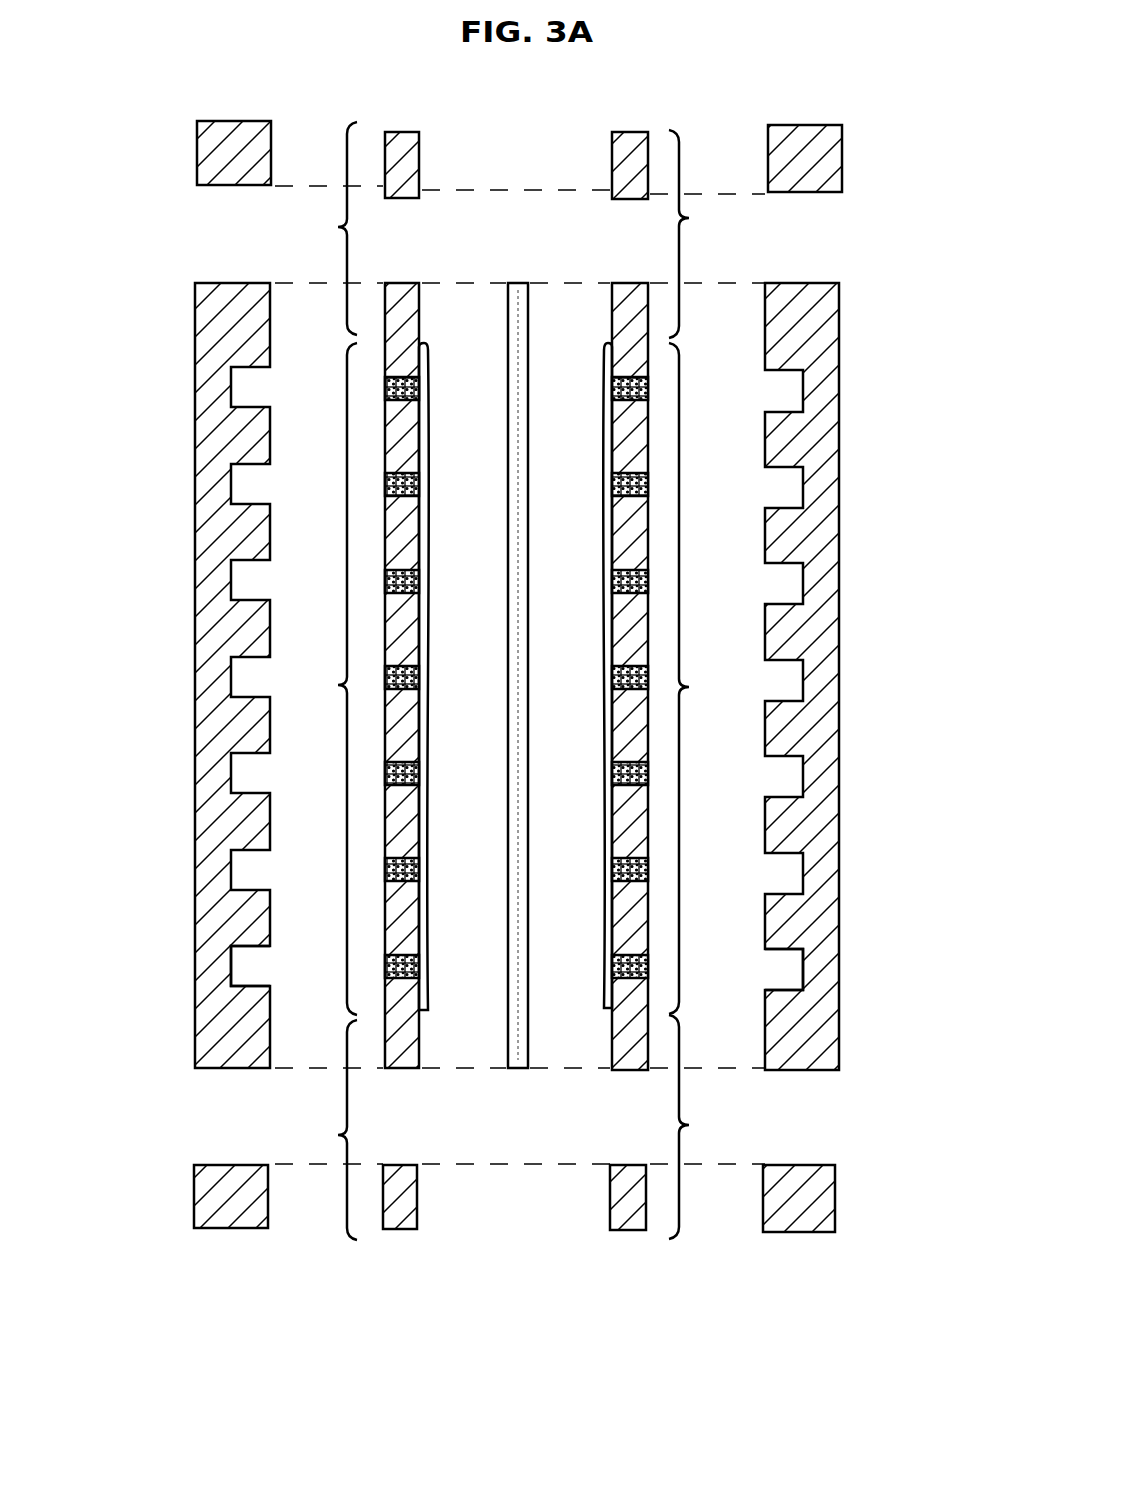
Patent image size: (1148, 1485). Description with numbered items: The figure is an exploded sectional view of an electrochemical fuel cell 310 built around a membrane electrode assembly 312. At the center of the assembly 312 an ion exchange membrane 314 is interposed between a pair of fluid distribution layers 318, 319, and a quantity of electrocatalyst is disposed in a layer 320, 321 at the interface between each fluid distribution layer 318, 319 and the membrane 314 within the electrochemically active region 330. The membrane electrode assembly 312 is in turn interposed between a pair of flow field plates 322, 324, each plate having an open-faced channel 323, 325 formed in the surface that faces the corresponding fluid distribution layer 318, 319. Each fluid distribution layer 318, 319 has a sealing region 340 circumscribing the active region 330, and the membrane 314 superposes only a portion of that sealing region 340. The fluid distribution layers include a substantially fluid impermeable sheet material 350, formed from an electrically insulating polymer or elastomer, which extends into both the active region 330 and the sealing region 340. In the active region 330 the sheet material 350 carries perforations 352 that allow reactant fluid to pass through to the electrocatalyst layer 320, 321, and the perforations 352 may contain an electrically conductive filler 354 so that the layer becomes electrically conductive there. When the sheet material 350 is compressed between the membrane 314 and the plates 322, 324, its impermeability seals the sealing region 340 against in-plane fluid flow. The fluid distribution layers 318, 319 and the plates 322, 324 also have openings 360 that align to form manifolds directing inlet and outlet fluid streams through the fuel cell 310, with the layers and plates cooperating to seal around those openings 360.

The electrochemical fuel cell 310 is at (855, 122).
The membrane electrode assembly 312 is at (512, 697).
The ion exchange membrane 314 is at (515, 290).
The fluid distribution layer 318 is at (414, 120).
The fluid distribution layer 319 is at (633, 120).
The electrocatalyst layer 320 is at (428, 347).
The electrocatalyst layer 321 is at (610, 966).
The flow field plate 322 is at (200, 1037).
The open-faced channel 323 is at (255, 967).
The flow field plate 324 is at (818, 1044).
The open-faced channel 325 is at (788, 966).
The electrochemically active region 330 is at (512, 679).
The sealing region 340 is at (512, 681).
The substantially fluid impermeable sheet material 350 is at (393, 1230).
The perforations 352 is at (388, 868).
The electrically conductive filler 354 is at (648, 578).
The openings 360 is at (230, 243).